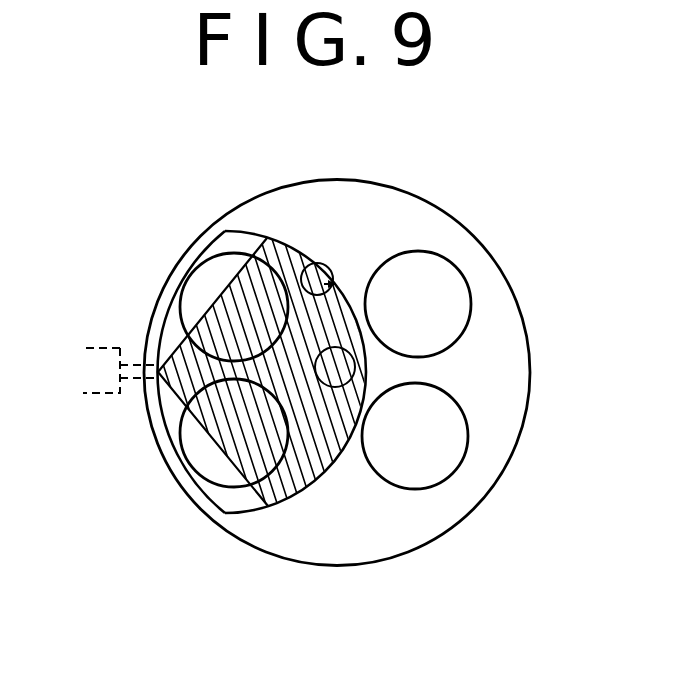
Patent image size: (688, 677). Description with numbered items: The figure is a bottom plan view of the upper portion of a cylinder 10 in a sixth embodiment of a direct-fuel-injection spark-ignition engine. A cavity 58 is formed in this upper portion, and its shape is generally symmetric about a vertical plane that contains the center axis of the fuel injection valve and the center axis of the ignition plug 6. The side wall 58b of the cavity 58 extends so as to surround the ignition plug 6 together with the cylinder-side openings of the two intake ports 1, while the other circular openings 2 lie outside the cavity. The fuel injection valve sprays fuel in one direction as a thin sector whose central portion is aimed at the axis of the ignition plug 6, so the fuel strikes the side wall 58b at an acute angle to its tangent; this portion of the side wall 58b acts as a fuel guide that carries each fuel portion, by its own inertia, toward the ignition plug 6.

The intake port 1 is at (200, 293).
The electric wire 2 is at (443, 293).
The ignition plug 6 is at (352, 367).
The cylinder 10 is at (526, 418).
The cavity 58 is at (232, 495).
The side wall 58b is at (308, 263).